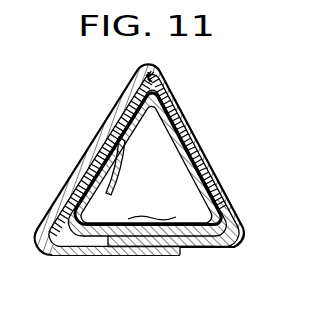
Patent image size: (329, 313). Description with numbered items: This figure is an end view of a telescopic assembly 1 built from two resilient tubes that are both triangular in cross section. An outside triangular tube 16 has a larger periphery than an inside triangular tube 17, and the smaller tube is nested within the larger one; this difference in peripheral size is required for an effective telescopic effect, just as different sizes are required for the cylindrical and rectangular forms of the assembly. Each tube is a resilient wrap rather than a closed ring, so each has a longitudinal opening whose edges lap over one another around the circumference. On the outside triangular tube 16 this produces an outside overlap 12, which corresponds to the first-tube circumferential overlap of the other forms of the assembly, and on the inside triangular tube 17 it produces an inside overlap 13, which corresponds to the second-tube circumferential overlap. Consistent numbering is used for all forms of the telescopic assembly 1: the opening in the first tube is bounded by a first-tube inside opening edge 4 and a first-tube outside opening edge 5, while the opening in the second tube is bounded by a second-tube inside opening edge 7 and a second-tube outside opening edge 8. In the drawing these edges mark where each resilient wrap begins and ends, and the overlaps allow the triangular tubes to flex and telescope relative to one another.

The telescopic assembly 1 is at (151, 175).
The first-tube inside opening edge 4 is at (108, 240).
The first-tube outside opening edge 5 is at (183, 250).
The second-tube inside opening edge 7 is at (64, 201).
The second-tube outside opening edge 8 is at (115, 113).
The outside overlap 12 is at (146, 164).
The inside overlap 13 is at (116, 175).
The outside triangular tube 16 is at (183, 125).
The inside triangular tube 17 is at (207, 161).